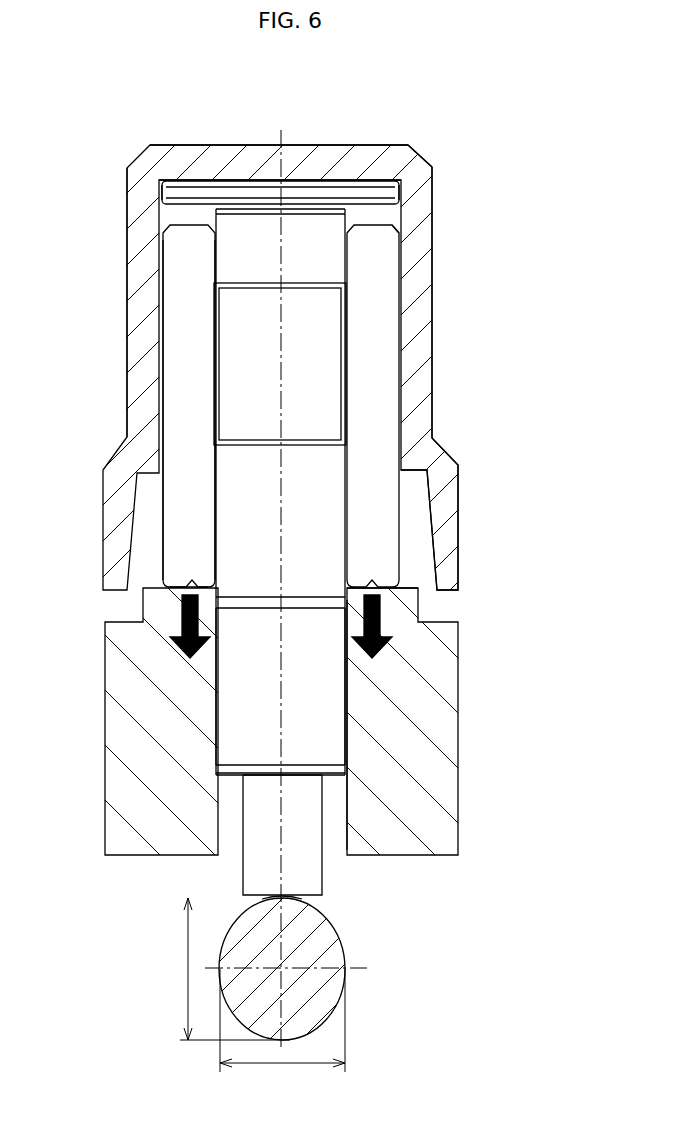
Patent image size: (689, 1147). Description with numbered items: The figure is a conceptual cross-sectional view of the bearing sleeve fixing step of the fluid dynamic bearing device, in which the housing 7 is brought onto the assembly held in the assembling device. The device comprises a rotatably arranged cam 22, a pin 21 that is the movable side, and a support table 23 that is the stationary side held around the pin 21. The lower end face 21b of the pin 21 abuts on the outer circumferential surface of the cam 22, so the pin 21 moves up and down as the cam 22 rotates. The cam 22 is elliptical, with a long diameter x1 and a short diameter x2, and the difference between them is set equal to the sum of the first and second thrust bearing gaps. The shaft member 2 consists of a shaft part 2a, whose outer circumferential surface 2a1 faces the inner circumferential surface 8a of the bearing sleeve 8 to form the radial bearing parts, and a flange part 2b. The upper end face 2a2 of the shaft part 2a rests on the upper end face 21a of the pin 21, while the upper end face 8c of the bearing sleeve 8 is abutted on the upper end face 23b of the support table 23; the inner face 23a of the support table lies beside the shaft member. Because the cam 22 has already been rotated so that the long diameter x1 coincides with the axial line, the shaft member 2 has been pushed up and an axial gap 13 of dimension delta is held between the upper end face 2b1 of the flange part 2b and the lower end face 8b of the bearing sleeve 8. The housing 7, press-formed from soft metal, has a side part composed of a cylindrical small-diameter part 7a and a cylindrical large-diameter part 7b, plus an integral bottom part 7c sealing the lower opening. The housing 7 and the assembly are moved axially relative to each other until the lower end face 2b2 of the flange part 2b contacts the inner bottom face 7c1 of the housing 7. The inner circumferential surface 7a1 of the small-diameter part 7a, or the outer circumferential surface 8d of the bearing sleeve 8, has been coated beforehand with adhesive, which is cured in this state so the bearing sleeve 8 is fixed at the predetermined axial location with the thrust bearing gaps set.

The shaft member 2 is at (243, 516).
The shaft part 2a is at (247, 688).
The outer circumferential surface of the shaft part 2a1 is at (346, 494).
The upper end face of the shaft part 2a2 is at (311, 780).
The flange part 2b is at (233, 187).
The upper end face of the flange part 2b1 is at (188, 208).
The lower end face of the flange part 2b2 is at (374, 212).
The housing 7 is at (430, 372).
The small-diameter part 7a is at (418, 288).
The inner circumferential surface of the small-diameter part 7a1 is at (163, 271).
The large-diameter part 7b is at (448, 542).
The bottom part 7c is at (328, 158).
The inner bottom face of the housing 7c1 is at (198, 190).
The bearing sleeve 8 is at (181, 331).
The inner circumferential surface of the bearing sleeve 8a is at (216, 403).
The lower end face of the bearing sleeve 8b is at (380, 217).
The upper end face of the bearing sleeve 8c is at (150, 606).
The outer circumferential surface of the bearing sleeve 8d is at (160, 402).
The axial gap 13 is at (402, 172).
The pin 21 is at (250, 872).
The upper end face of the pin 21a is at (257, 770).
The lower end face of the pin 21b is at (303, 912).
The cam 22 is at (332, 945).
The support table 23 is at (441, 675).
The inner surface of fixing jig 23a is at (347, 685).
The upper end face of the support table 23b is at (398, 573).
The long diameter x1 is at (224, 969).
The short diameter x2 is at (282, 1035).